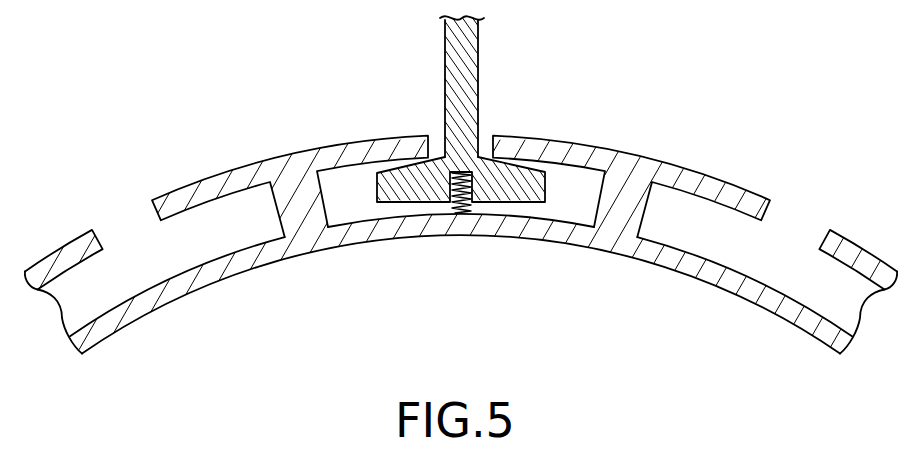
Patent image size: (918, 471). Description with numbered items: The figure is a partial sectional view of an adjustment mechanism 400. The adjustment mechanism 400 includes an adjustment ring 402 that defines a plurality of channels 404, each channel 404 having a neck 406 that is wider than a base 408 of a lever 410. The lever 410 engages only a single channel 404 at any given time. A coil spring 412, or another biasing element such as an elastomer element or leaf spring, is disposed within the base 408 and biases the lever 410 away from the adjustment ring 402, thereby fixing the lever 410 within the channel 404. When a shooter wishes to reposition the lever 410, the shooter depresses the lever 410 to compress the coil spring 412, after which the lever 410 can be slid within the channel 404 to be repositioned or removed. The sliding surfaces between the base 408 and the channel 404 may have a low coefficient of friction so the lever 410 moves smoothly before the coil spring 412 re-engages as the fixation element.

The adjustment mechanism 400 is at (708, 67).
The adjustment ring 402 is at (600, 232).
The channel 404 is at (345, 222).
The neck 406 is at (120, 205).
The base 408 is at (510, 184).
The lever 410 is at (467, 72).
The coil spring 412 is at (478, 196).